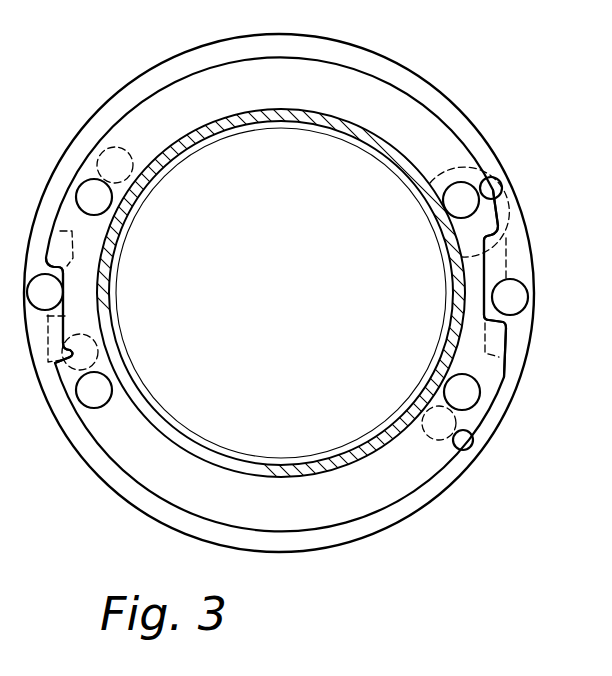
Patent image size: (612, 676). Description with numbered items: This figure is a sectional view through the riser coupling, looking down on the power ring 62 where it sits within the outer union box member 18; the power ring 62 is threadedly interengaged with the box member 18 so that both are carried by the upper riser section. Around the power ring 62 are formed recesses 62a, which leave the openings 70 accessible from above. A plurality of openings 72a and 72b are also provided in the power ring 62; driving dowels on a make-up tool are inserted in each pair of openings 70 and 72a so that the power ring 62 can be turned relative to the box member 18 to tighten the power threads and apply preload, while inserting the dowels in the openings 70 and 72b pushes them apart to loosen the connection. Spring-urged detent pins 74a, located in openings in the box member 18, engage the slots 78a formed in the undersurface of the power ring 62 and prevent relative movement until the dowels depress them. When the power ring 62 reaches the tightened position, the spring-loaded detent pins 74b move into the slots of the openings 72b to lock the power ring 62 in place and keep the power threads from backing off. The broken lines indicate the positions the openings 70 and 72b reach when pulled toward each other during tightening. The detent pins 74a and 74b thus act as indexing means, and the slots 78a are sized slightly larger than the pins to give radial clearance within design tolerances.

The union box member 18 is at (409, 83).
The power ring 62 is at (356, 83).
The recesses 62a is at (68, 318).
The openings 70 is at (50, 281).
The openings 72a is at (452, 197).
The openings 72b is at (105, 194).
The detent pins 74a is at (482, 183).
The detent pins 74b is at (470, 441).
The slots 78a is at (416, 174).